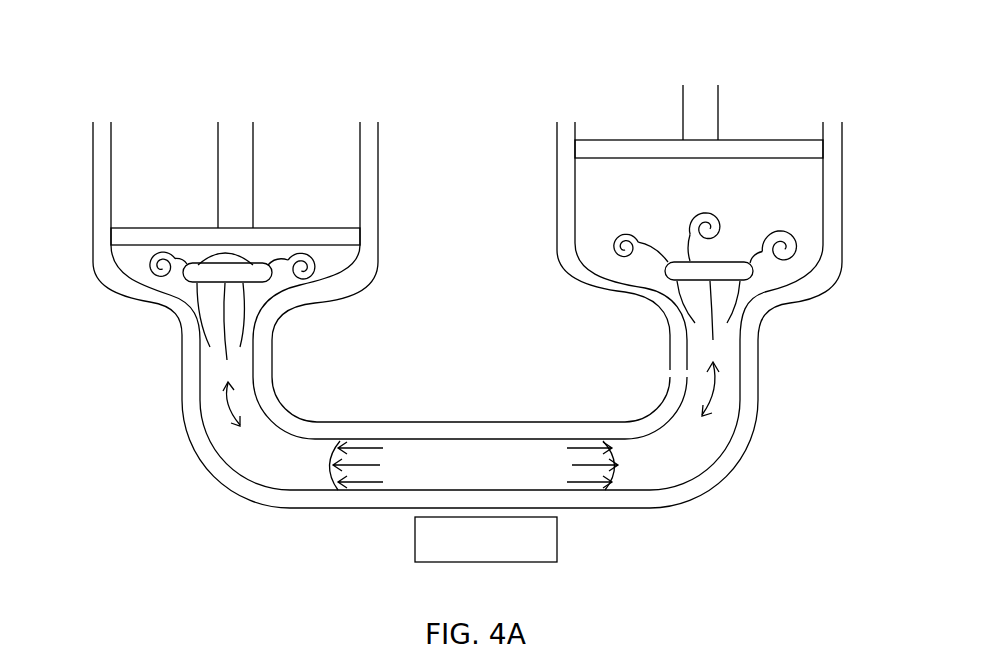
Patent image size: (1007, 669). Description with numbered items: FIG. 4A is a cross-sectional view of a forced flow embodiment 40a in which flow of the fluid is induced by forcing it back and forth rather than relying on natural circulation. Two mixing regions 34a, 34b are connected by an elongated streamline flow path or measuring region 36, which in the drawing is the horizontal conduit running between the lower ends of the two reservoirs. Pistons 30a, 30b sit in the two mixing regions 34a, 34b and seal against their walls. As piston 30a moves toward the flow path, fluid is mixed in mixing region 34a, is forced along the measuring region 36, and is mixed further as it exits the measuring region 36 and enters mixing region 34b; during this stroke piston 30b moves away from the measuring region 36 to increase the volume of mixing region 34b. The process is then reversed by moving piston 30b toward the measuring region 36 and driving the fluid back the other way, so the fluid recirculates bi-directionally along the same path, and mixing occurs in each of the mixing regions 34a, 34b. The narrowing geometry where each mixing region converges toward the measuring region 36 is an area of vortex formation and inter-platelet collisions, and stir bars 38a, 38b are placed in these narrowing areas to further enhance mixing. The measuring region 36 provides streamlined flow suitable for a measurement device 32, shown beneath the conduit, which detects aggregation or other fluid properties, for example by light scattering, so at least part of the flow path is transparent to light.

The forced flow embodiment 40a is at (147, 88).
The piston 30a is at (188, 237).
The piston 30b is at (627, 152).
The mixing region 34a is at (132, 258).
The mixing region 34b is at (782, 207).
The stir bar 38a is at (233, 276).
The stir bar 38b is at (717, 272).
The measuring region 36 is at (613, 408).
The measurement device 32 is at (486, 539).